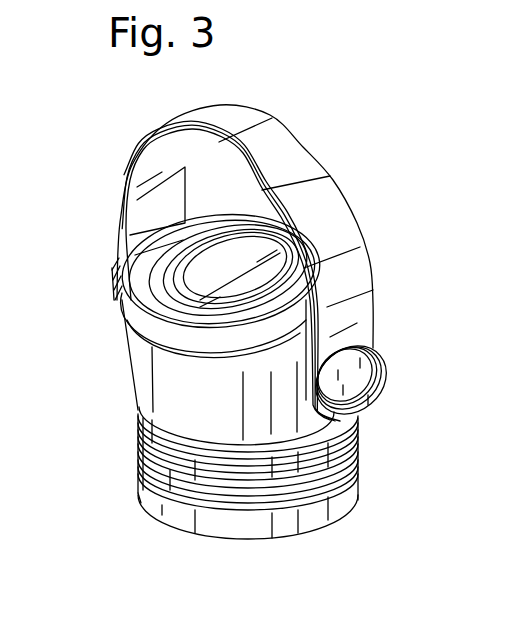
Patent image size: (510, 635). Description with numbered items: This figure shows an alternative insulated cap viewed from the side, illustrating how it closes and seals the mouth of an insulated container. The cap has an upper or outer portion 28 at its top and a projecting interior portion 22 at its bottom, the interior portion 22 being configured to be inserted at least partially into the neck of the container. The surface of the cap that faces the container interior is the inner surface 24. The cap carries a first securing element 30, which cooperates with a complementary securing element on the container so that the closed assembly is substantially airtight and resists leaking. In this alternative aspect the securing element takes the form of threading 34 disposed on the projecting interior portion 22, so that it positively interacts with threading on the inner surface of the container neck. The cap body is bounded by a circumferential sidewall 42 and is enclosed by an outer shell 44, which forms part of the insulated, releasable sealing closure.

The interior portion 22 is at (283, 548).
The inner surface 24 is at (218, 540).
The upper or outer portion 28 is at (229, 278).
The first securing element 30 is at (108, 428).
The threading 34 is at (133, 443).
The circumferential sidewall 42 is at (117, 355).
The outer shell 44 is at (118, 318).